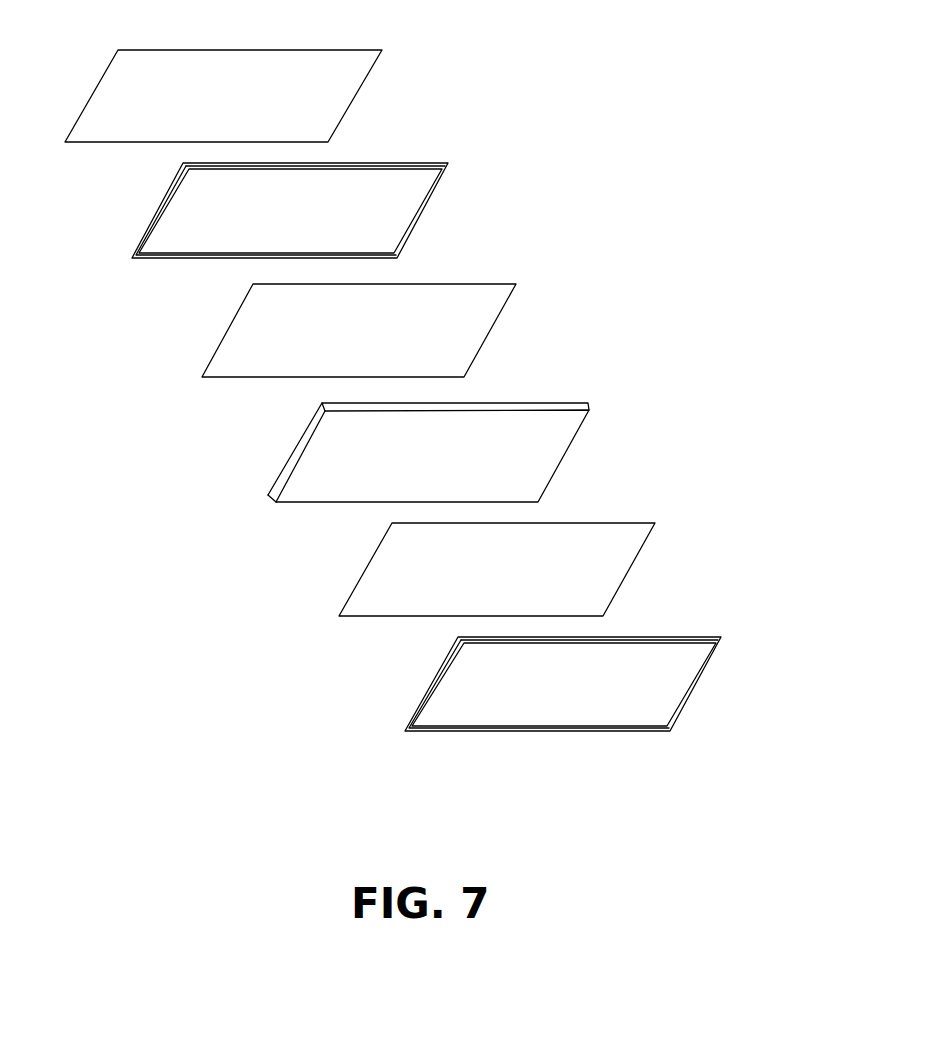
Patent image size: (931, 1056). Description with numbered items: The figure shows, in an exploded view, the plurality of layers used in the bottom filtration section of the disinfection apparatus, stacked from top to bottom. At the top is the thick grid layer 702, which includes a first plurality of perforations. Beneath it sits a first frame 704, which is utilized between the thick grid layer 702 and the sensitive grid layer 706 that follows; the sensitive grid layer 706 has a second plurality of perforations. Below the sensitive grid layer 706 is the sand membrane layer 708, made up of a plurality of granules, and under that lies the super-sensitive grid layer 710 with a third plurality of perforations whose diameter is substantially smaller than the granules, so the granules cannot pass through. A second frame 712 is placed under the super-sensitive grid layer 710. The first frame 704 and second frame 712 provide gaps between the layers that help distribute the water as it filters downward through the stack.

The thick grid layer 702 is at (382, 50).
The first frame 704 is at (448, 165).
The sensitive grid layer 706 is at (516, 284).
The sand membrane layer 708 is at (588, 403).
The super-sensitive grid layer 710 is at (655, 523).
The second frame 712 is at (721, 638).